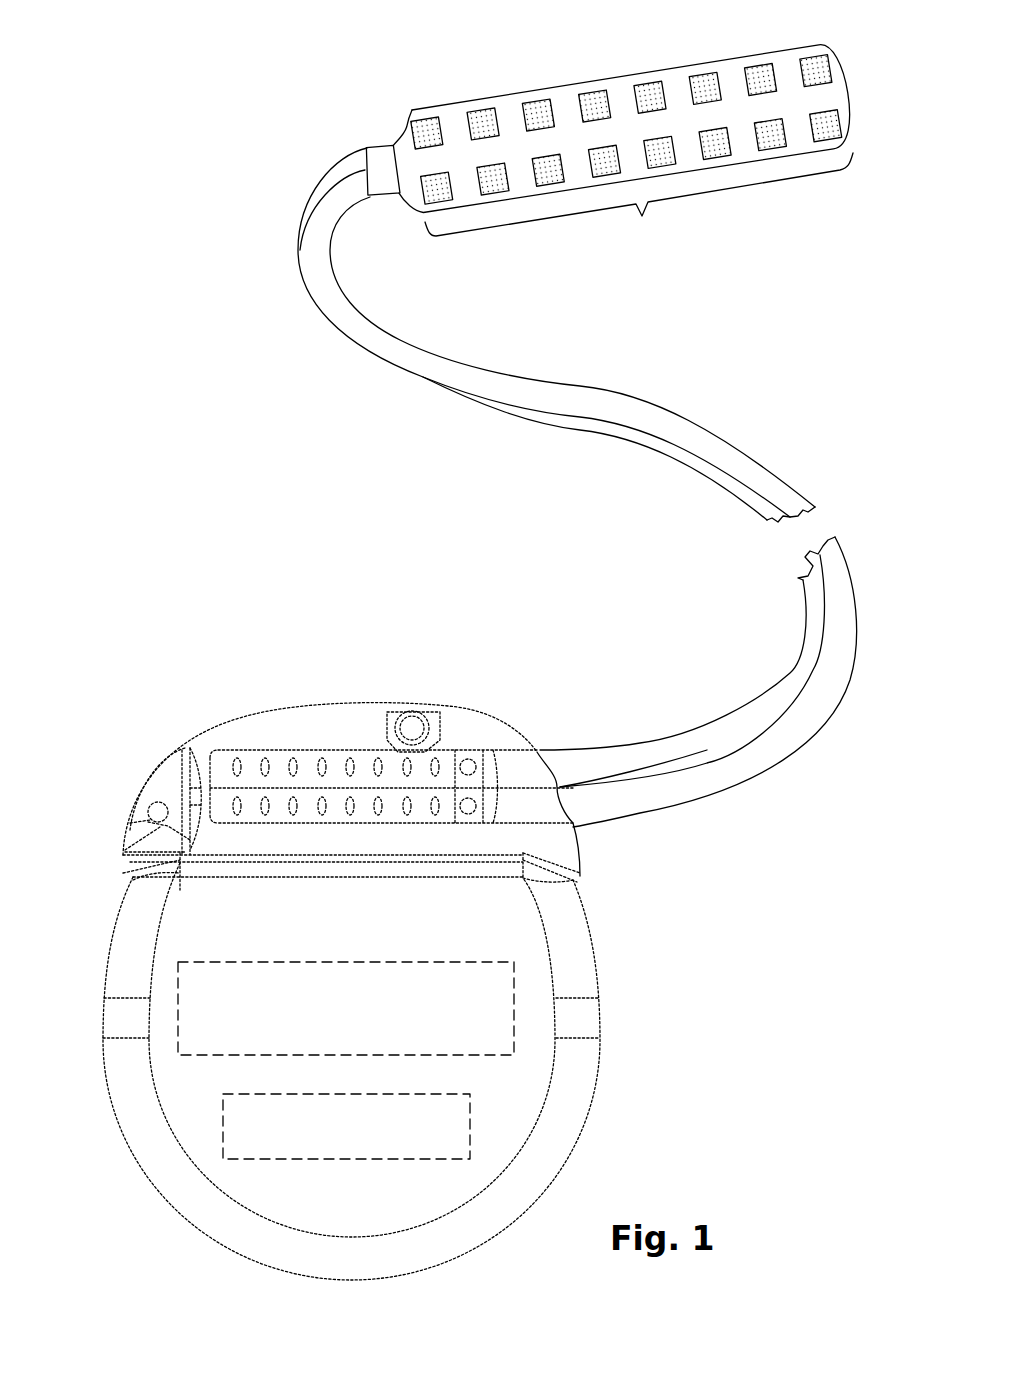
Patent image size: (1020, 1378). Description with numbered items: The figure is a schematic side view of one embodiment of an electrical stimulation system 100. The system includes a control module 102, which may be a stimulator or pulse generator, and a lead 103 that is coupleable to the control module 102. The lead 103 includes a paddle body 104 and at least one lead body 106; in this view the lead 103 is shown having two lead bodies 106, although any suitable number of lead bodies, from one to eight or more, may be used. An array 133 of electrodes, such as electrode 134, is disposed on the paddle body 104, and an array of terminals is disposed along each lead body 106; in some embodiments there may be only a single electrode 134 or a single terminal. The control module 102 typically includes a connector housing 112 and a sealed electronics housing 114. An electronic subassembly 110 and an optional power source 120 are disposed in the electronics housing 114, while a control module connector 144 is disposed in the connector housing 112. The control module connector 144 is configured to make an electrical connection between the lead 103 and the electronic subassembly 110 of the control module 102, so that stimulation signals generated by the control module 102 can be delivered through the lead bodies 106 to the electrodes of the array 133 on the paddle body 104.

The electrical stimulation system 100 is at (140, 176).
The control module 102 is at (160, 738).
The lead 103 is at (770, 402).
The paddle body 104 is at (835, 91).
The lead body 106 is at (670, 413).
The electronic subassembly 110 is at (197, 1015).
The connector housing 112 is at (328, 718).
The electronics housing 114 is at (178, 937).
The power source 120 is at (243, 1130).
The array of electrodes 133 is at (632, 151).
The electrode 134 is at (585, 97).
The control module connector 144 is at (443, 752).